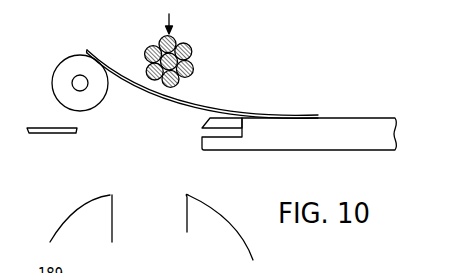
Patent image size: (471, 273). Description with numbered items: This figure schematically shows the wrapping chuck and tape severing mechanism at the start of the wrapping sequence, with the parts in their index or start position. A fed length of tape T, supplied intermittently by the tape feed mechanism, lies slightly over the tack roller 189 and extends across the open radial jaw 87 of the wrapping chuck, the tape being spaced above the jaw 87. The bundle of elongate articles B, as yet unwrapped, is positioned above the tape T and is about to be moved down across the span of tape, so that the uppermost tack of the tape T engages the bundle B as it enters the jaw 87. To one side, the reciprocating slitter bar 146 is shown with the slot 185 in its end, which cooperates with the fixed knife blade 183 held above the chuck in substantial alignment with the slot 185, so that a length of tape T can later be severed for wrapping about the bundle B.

The tack roller 189 is at (68, 65).
The knife blade 183 is at (53, 133).
The tape T is at (298, 114).
The bundle of elongate articles B is at (191, 47).
The slot 185 is at (231, 128).
The slitter bar 146 is at (366, 118).
The radial jaw 87 is at (181, 225).